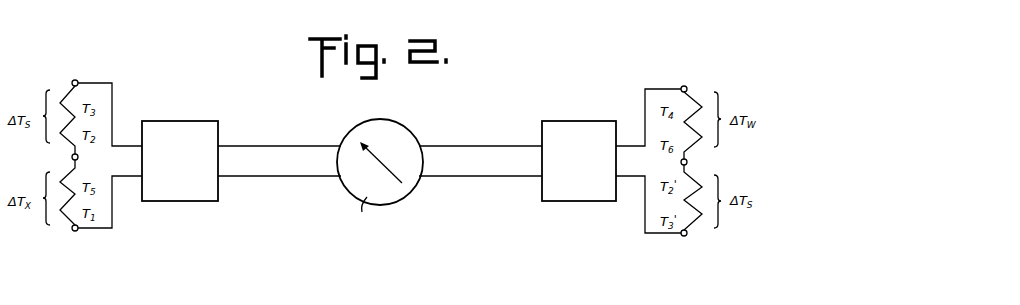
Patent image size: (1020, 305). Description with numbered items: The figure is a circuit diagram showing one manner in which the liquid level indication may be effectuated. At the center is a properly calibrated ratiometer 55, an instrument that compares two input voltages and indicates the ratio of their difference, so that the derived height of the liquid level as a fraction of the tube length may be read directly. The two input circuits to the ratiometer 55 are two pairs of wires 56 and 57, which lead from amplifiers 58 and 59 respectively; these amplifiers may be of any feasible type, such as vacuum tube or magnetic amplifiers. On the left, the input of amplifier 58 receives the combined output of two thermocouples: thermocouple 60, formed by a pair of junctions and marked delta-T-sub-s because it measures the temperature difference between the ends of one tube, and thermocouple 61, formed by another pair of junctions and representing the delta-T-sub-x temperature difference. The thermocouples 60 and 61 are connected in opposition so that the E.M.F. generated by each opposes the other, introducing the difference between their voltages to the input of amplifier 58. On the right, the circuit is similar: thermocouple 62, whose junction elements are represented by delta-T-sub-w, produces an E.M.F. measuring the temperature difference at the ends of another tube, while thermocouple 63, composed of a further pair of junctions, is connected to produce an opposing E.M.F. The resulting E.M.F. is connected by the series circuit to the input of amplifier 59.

The ratiometer 55 is at (408, 137).
The pair of wires 56 is at (263, 176).
The pair of wires 57 is at (480, 177).
The amplifier 58 is at (183, 127).
The amplifier 59 is at (578, 128).
The thermocouple 60 is at (67, 88).
The thermocouple 61 is at (60, 226).
The thermocouple 62 is at (703, 94).
The thermocouple 63 is at (702, 234).